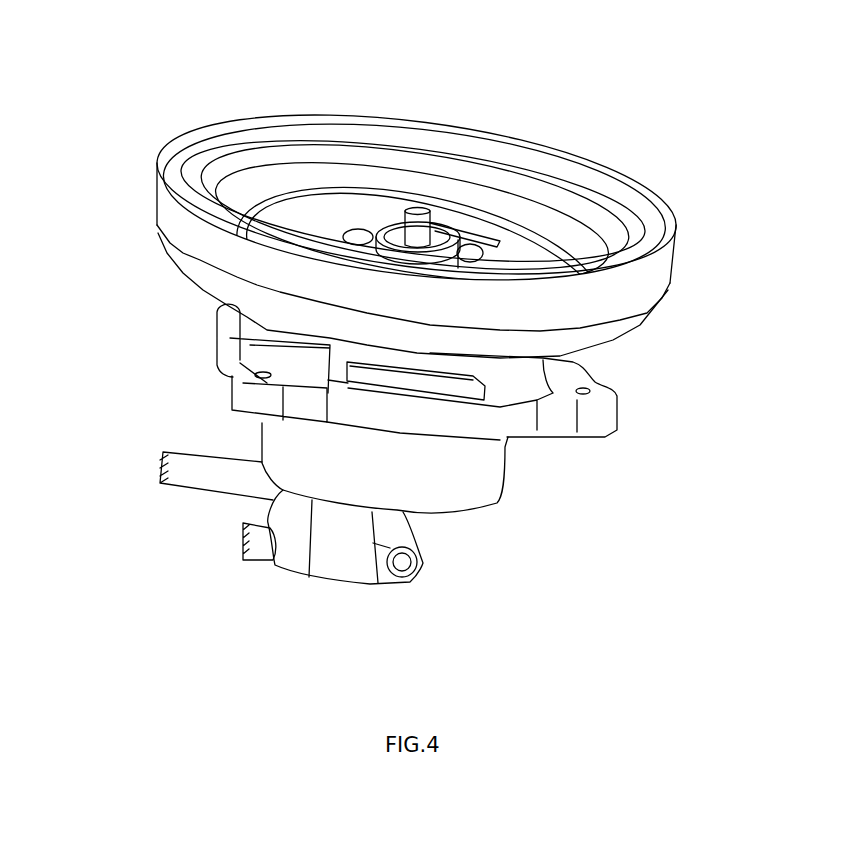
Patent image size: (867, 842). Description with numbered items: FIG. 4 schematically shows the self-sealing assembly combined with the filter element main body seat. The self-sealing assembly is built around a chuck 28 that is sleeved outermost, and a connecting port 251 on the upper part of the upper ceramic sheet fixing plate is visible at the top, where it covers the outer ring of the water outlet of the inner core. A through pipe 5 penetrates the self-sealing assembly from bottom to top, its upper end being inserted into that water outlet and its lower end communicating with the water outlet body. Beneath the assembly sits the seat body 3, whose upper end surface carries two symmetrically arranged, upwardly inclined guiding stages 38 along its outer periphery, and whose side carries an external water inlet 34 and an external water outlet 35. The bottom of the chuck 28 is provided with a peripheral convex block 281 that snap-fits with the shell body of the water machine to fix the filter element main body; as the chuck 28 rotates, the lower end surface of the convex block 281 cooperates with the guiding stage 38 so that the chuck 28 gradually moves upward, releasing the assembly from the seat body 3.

The through pipe 5 is at (425, 212).
The connecting port 251 is at (490, 243).
The chuck 28 is at (653, 283).
The seat body 3 is at (603, 418).
The guiding stage 38 is at (293, 361).
The external water inlet 34 is at (192, 470).
The convex block 281 is at (440, 380).
The external water outlet 35 is at (420, 563).